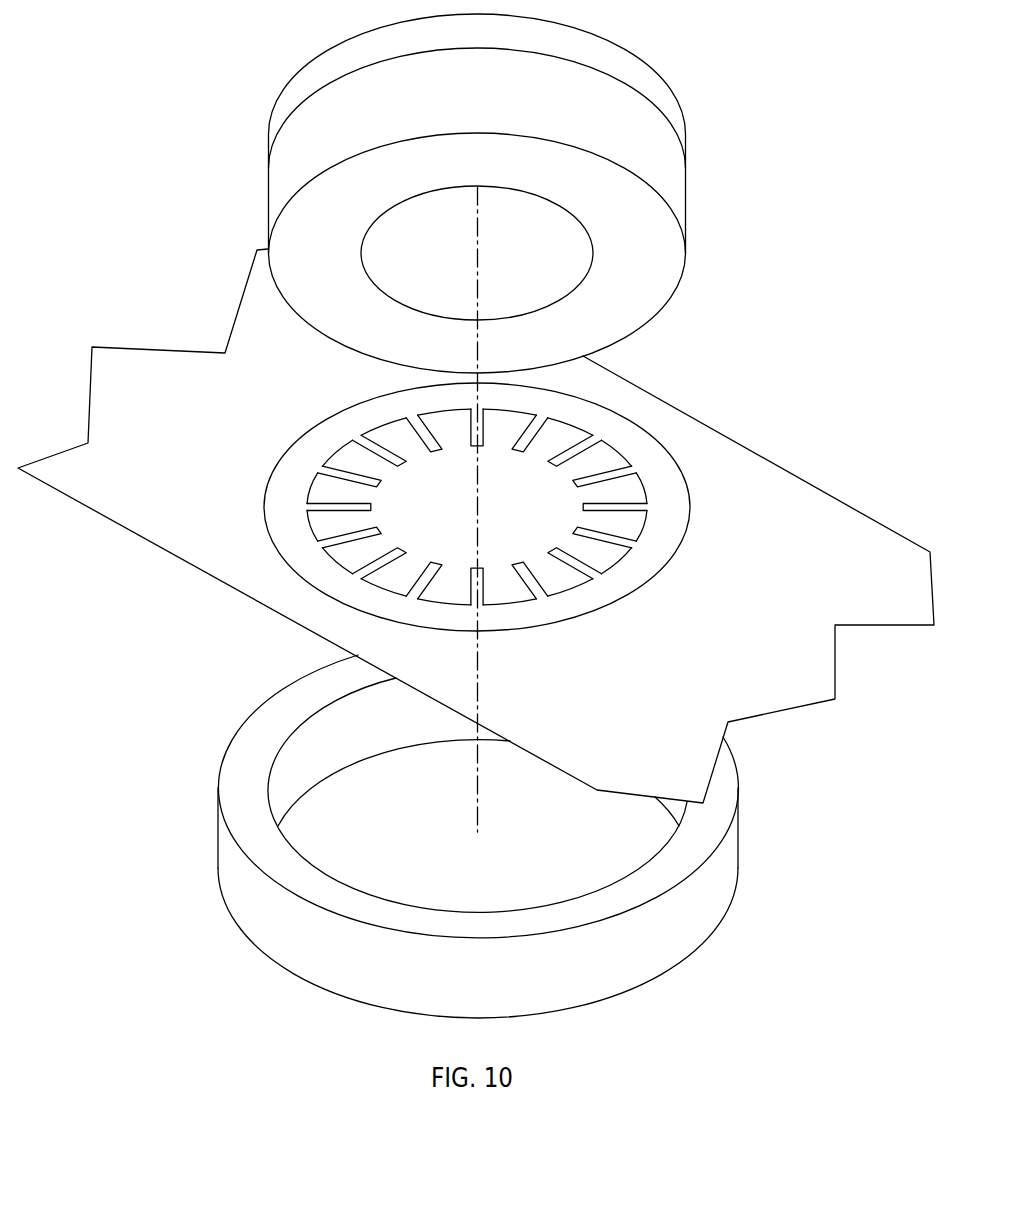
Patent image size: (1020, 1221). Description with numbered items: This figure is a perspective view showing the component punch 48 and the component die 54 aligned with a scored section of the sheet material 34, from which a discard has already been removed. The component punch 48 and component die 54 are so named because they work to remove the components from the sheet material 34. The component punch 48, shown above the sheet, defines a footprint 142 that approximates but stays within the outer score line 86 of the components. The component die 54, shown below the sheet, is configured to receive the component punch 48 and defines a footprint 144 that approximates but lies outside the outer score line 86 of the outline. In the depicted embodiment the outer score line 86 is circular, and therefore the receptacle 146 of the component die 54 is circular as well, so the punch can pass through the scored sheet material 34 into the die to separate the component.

The sheet material 34 is at (127, 356).
The component punch 48 is at (510, 193).
The component die 54 is at (499, 828).
The outer score line 86 is at (662, 446).
The footprint 142 is at (642, 280).
The footprint 144 is at (258, 737).
The receptacle 146 is at (303, 735).